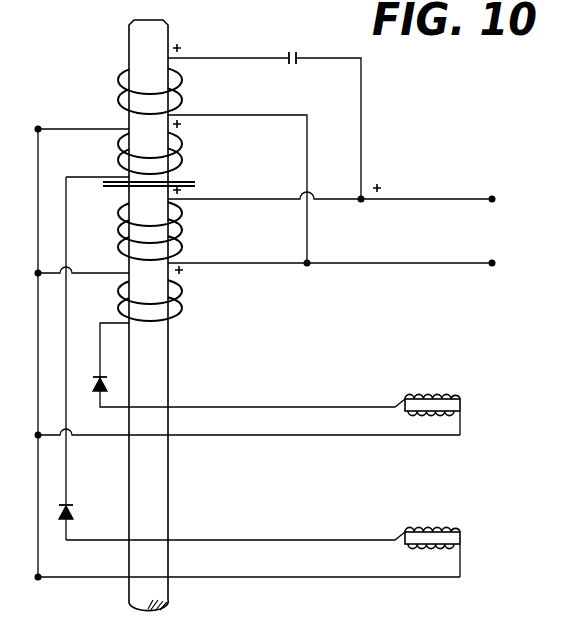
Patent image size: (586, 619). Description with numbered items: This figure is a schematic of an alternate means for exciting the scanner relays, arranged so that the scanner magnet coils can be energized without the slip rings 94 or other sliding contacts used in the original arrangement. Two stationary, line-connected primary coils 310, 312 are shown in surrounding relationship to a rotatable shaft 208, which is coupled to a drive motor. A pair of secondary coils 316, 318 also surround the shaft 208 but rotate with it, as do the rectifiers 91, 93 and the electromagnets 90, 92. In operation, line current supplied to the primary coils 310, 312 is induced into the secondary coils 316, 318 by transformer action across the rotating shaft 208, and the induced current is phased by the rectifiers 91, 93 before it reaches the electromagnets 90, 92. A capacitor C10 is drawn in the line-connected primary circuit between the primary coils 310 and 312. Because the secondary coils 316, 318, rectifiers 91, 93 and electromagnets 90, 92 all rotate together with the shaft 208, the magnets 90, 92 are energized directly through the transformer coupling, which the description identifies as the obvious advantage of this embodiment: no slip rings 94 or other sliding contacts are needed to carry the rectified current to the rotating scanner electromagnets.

The rotatable shaft 208 is at (168, 38).
The slip rings 94 is at (113, 119).
The primary coil 310 is at (182, 82).
The secondary coil 316 is at (182, 150).
The primary coil 312 is at (182, 240).
The secondary coil 318 is at (182, 300).
The capacitor C10 is at (292, 66).
The rectifier 93 is at (98, 393).
The electromagnet 92 is at (462, 405).
The rectifier 91 is at (72, 513).
The electromagnet 90 is at (462, 538).